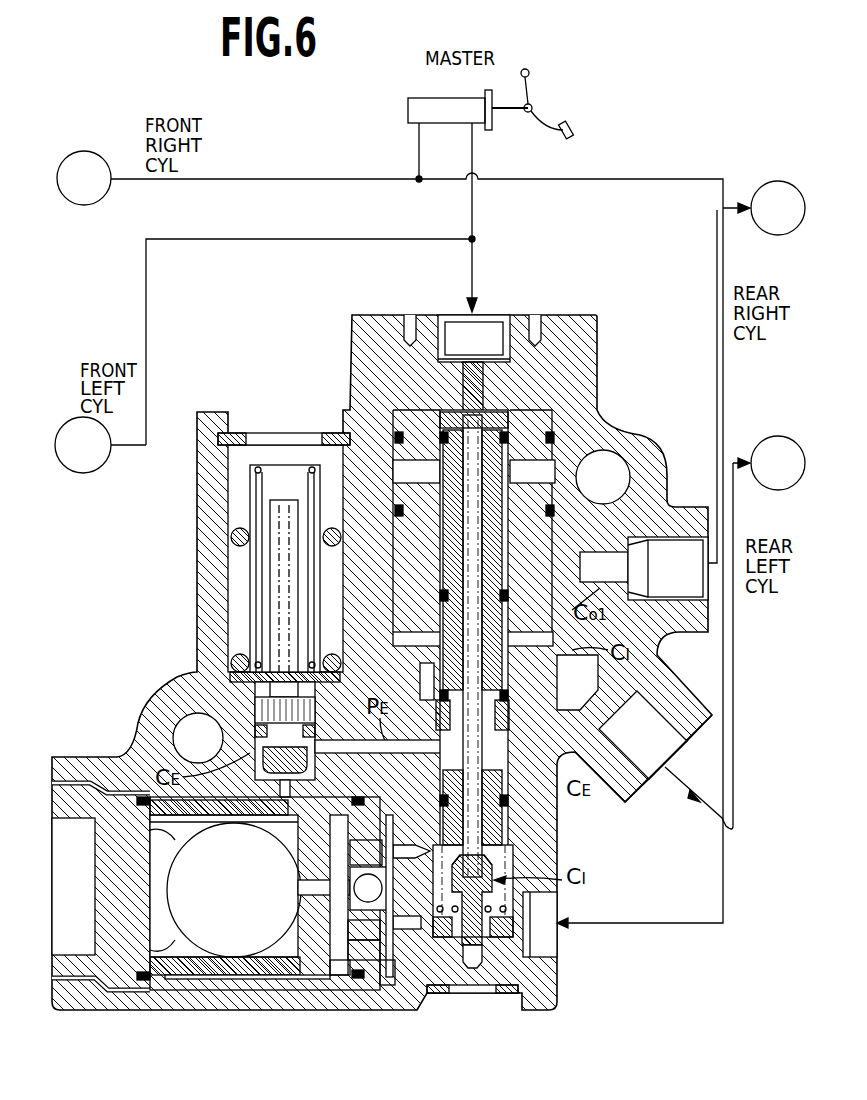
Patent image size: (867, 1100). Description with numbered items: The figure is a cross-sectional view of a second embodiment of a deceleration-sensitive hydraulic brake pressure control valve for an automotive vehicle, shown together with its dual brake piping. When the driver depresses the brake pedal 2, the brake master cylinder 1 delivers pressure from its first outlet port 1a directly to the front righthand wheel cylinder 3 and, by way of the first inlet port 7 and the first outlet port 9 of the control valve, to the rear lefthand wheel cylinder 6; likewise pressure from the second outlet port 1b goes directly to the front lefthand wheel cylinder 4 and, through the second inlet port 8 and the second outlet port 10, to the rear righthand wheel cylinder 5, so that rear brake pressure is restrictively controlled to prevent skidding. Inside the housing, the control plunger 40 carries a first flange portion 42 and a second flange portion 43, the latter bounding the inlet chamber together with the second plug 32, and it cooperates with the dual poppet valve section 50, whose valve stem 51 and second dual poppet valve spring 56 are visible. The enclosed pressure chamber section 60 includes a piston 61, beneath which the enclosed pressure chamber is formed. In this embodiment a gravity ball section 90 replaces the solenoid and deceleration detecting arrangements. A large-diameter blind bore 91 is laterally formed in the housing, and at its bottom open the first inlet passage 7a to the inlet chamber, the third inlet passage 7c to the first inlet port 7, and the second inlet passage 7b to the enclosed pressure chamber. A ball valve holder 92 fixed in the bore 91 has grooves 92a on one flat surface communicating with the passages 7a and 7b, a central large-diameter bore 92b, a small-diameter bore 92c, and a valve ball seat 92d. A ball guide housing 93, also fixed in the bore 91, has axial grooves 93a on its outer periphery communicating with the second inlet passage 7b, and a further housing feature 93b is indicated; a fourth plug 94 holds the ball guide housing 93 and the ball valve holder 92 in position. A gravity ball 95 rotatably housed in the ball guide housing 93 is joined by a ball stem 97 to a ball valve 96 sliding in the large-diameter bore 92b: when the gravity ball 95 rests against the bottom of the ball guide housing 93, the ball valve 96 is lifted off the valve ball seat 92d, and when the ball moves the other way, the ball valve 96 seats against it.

The brake master cylinder 1 is at (415, 97).
The first outlet port 1a is at (415, 148).
The second outlet port 1b is at (476, 148).
The brake pedal 2 is at (573, 125).
The front righthand wheel cylinder 3 is at (105, 160).
The front lefthand wheel cylinder 4 is at (65, 421).
The rear righthand wheel cylinder 5 is at (762, 232).
The rear lefthand wheel cylinder 6 is at (770, 490).
The first inlet port 7 is at (545, 940).
The first inlet passage 7a is at (418, 848).
The second inlet passage 7b is at (292, 786).
The third inlet passage 7c is at (418, 930).
The second inlet port 8 is at (478, 325).
The first outlet port 9 is at (672, 742).
The second outlet port 10 is at (672, 560).
The second plug 32 is at (460, 993).
The control plunger 40 is at (500, 770).
The first flange portion 42 is at (505, 748).
The second flange portion 43 is at (520, 800).
The dual poppet valve section 50 is at (495, 885).
The valve stem 51 is at (482, 857).
The second dual poppet valve spring 56 is at (372, 405).
The enclosed pressure chamber section 60 is at (245, 572).
The piston 61 is at (196, 673).
The gravity ball section 90 is at (82, 840).
The large-diameter blind bore 91 is at (340, 980).
The ball valve holder 92 is at (395, 985).
The grooves 92a is at (395, 975).
The large-diameter bore 92b is at (368, 962).
The small-diameter bore 92c is at (355, 942).
The valve ball seat 92d is at (368, 960).
The ball guide housing 93 is at (215, 1005).
The grooves 93a is at (222, 817).
The housing plate 93b is at (300, 980).
The fourth plug 94 is at (130, 890).
The gravity ball 95 is at (243, 926).
The ball valve 96 is at (369, 888).
The ball stem 97 is at (300, 885).